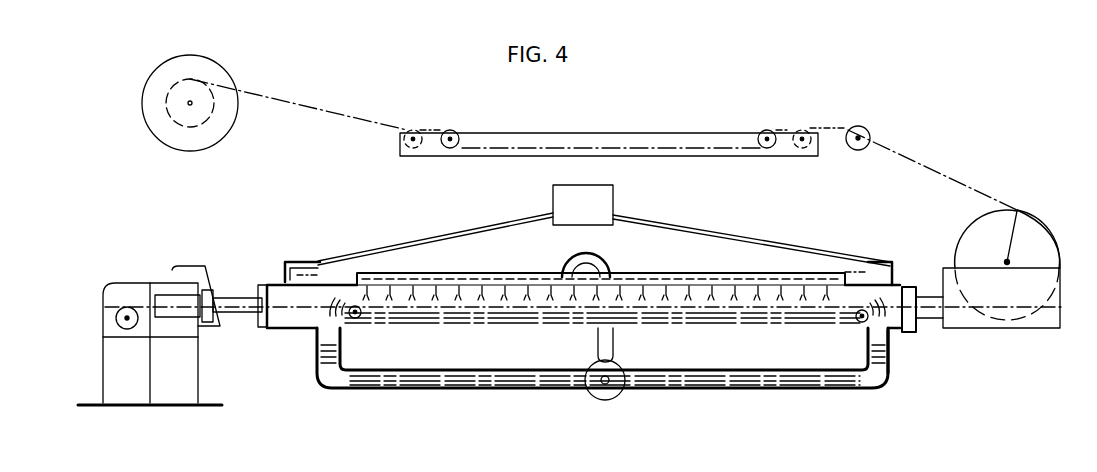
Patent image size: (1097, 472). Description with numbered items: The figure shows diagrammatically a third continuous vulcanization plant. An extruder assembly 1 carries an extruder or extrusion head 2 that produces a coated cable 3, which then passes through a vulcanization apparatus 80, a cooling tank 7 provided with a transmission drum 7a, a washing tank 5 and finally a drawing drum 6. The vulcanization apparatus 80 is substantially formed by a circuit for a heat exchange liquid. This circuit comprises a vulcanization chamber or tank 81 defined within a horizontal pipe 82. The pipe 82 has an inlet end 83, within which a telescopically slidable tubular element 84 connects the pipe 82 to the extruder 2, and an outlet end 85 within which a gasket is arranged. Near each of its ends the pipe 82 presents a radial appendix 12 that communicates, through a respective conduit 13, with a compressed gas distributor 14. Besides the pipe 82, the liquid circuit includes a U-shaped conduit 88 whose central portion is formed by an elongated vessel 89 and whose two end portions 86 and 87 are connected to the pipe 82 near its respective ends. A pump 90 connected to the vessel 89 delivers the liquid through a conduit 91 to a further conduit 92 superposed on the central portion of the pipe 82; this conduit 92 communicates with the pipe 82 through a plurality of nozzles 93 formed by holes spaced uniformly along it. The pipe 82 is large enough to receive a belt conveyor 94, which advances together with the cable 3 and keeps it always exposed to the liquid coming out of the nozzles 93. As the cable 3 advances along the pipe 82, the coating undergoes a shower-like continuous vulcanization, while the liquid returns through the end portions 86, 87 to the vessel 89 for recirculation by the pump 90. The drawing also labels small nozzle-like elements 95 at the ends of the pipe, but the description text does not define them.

The extruder assembly 1 is at (94, 327).
The extruder or extrusion head 2 is at (181, 315).
The coated cable 3 is at (306, 103).
The washing tank 5 is at (592, 142).
The drawing drum 6 is at (212, 74).
The cooling tank 7 is at (1055, 307).
The transmission drum 7a is at (972, 246).
The radial appendix 12 is at (308, 268).
The conduit 13 is at (420, 240).
The compressed gas distributor 14 is at (607, 207).
The vulcanization apparatus 80 is at (316, 394).
The vulcanization chamber or tank 81 is at (464, 332).
The horizontal pipe 82 is at (697, 333).
The inlet end 83 is at (266, 325).
The telescopically slidable tubular element 84 is at (237, 297).
The outlet end 85 is at (930, 318).
The end portion of U-shaped conduit 86 is at (329, 343).
The end portion of U-shaped conduit 87 is at (886, 344).
The U-shaped conduit 88 is at (544, 378).
The elongated vessel 89 is at (678, 385).
The pump 90 is at (614, 364).
The conduit 91 is at (601, 262).
The conduit 92 is at (664, 273).
The nozzles 93 is at (462, 289).
The belt conveyor 94 is at (533, 320).
The end nozzles 95 is at (361, 318).